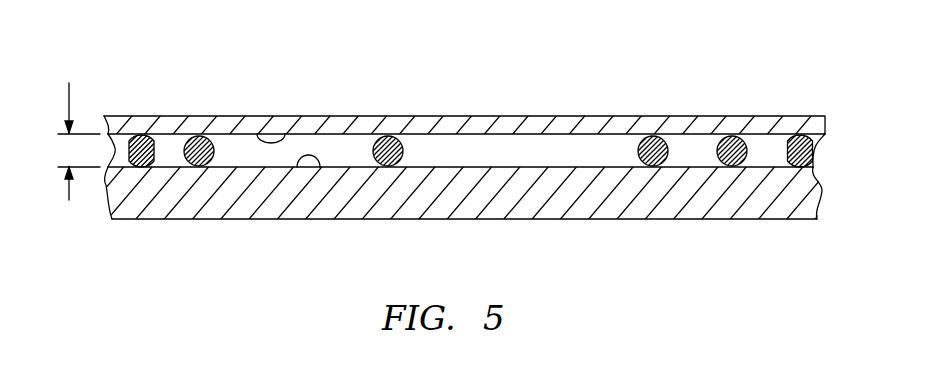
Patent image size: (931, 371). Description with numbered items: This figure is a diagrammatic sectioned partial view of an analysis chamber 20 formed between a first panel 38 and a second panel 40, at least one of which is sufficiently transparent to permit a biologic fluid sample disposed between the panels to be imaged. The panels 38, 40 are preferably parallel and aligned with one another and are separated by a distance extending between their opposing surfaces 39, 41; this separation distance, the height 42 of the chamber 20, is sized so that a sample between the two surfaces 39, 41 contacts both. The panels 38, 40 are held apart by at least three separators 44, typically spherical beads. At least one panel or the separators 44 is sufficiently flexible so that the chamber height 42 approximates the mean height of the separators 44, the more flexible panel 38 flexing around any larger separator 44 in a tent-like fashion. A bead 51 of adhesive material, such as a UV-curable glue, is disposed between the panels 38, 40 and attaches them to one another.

The analysis chamber 20 is at (548, 152).
The first panel 38 is at (342, 125).
The opposing surface of first panel 39 is at (285, 134).
The second panel 40 is at (735, 205).
The opposing surface of second panel 41 is at (308, 167).
The height of the chamber 42 is at (69, 200).
The separators 44 is at (198, 135).
The bead of adhesive material 51 is at (142, 134).